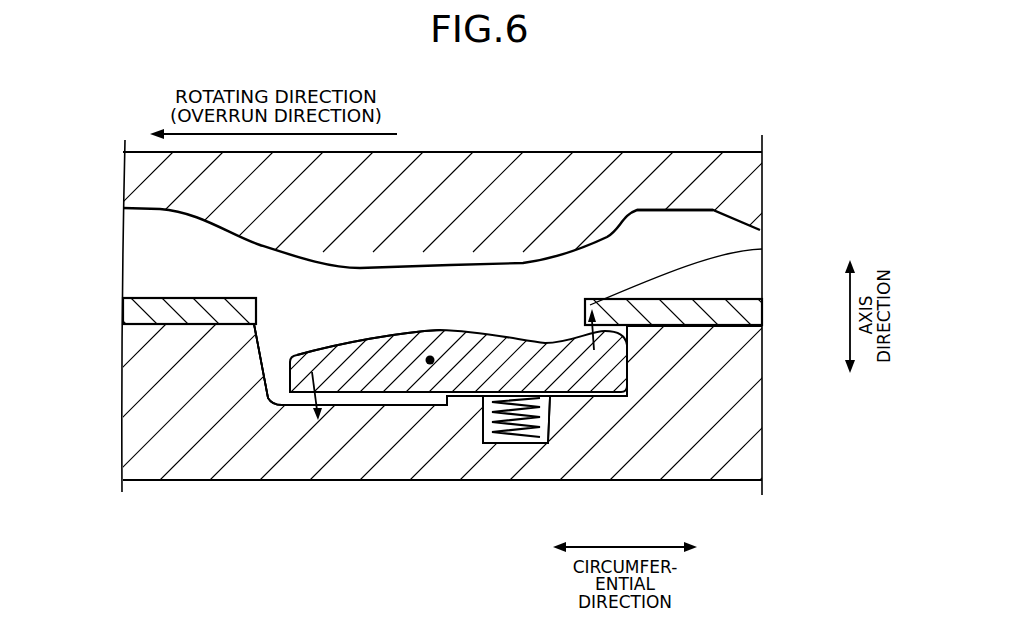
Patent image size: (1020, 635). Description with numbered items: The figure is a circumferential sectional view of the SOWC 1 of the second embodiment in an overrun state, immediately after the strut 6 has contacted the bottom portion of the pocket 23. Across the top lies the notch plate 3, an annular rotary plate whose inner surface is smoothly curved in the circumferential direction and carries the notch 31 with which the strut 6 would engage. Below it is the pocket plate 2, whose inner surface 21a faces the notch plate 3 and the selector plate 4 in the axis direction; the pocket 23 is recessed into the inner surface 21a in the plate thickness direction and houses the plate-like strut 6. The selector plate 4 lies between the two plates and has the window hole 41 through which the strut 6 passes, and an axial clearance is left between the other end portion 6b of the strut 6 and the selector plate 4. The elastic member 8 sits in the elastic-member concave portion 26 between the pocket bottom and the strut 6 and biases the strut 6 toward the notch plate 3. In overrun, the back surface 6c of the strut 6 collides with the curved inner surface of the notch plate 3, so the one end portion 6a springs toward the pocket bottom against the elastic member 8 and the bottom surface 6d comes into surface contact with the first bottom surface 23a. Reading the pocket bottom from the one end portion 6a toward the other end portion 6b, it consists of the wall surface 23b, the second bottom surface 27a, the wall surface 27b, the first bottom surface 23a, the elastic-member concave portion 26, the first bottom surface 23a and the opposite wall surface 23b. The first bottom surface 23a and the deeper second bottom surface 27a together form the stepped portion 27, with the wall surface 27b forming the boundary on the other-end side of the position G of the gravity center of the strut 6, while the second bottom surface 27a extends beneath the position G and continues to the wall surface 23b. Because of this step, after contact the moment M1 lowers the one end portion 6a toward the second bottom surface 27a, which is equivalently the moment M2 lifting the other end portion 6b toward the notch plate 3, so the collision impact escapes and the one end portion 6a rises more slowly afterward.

The SOWC 1 is at (541, 113).
The pocket plate 2 is at (740, 412).
The notch plate 3 is at (740, 203).
The selector plate 4 is at (737, 313).
The strut 6 is at (435, 312).
The one end portion of strut 6a is at (274, 392).
The other end portion of strut 6b is at (627, 367).
The back surface of strut 6c is at (395, 331).
The bottom surface of strut 6d is at (396, 393).
The elastic member 8 is at (518, 432).
The inner surface of plate portion 21a is at (684, 324).
The pocket 23 is at (253, 324).
The first bottom surface 23a is at (463, 388).
The wall surface of pocket 23b is at (278, 405).
The elastic-member concave portion 26 is at (550, 432).
The stepped portion 27 is at (340, 421).
The second bottom surface 27a is at (372, 404).
The wall surface of stepped portion 27b is at (447, 405).
The notch 31 is at (672, 208).
The window hole 41 is at (256, 299).
The position of gravity center of strut G is at (430, 364).
The moment M1 is at (283, 408).
The moment M2 is at (762, 249).